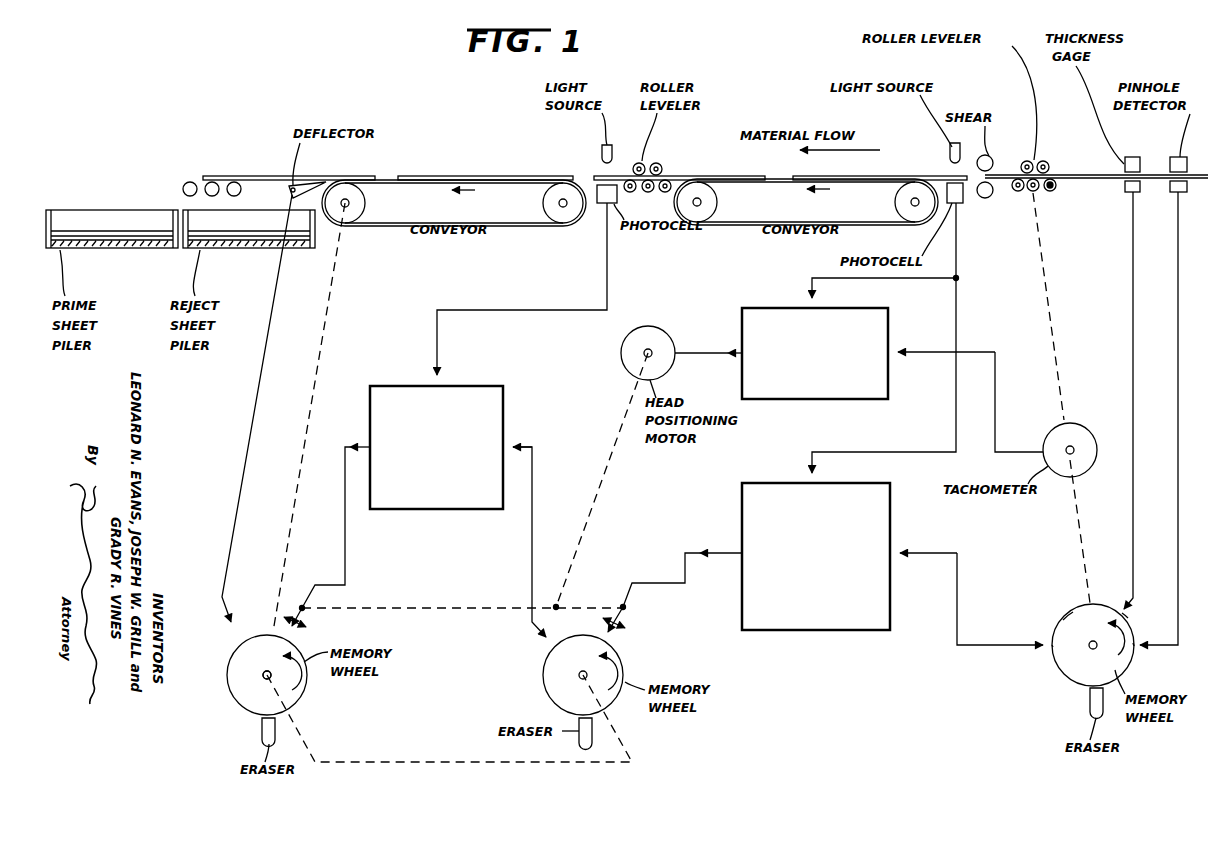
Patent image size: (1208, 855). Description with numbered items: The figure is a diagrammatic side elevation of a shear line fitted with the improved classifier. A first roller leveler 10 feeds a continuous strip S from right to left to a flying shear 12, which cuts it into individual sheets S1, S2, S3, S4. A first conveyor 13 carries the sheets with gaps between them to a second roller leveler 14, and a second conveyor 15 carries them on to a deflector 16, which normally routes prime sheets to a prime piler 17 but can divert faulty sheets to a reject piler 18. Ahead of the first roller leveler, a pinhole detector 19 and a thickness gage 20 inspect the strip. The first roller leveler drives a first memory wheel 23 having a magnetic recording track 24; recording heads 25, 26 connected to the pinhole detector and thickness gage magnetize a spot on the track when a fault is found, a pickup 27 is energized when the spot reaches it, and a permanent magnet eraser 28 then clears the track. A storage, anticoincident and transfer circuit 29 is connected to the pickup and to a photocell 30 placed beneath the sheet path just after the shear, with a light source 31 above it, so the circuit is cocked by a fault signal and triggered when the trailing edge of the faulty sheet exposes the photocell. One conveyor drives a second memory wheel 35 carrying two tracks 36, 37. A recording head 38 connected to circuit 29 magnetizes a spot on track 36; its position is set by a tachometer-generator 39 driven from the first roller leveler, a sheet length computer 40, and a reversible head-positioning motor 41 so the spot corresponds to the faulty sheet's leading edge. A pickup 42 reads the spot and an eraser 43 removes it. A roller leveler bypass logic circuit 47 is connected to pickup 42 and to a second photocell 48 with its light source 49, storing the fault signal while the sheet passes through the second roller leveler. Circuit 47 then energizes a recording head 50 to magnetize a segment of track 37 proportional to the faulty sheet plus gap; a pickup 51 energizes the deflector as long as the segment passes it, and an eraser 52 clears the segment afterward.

The individual sheet S1 is at (282, 170).
The individual sheet S2 is at (490, 170).
The individual sheet S3 is at (740, 170).
The individual sheet S4 is at (897, 170).
The continuous strip S is at (1092, 180).
The first roller leveler 10 is at (1048, 192).
The flying shear 12 is at (992, 160).
The first conveyor 13 is at (748, 225).
The second roller leveler 14 is at (659, 163).
The second conveyor 15 is at (536, 226).
The deflector 16 is at (288, 190).
The prime piler 17 is at (112, 249).
The reject piler 18 is at (247, 249).
The pinhole detector 19 is at (1176, 157).
The thickness gage 20 is at (1131, 157).
The first memory wheel 23 is at (1093, 645).
The magnetic recording track 24 is at (1062, 619).
The recording head 25 is at (1133, 642).
The recording head 26 is at (1125, 609).
The pickup 27 is at (1032, 654).
The permanent magnet eraser 28 is at (1089, 703).
The storage, anticoincident and transfer circuit 29 is at (872, 630).
The photocell 30 is at (962, 203).
The light source 31 is at (950, 157).
The second memory wheel 35 is at (408, 679).
The magnetic recording track 36 is at (622, 656).
The magnetic recording track 37 is at (301, 694).
The recording head 38 is at (672, 592).
The tachometer-generator 39 is at (1077, 430).
The sheet length computer 40 is at (865, 399).
The head-positioning motor 41 is at (658, 332).
The pickup 42 is at (541, 634).
The permanent magnet eraser 43 is at (579, 743).
The roller leveler bypass logic circuit 47 is at (490, 386).
The second photocell 48 is at (602, 204).
The light source 49 is at (602, 157).
The recording head 50 is at (302, 608).
The pickup 51 is at (237, 622).
The permanent magnet eraser 52 is at (262, 733).